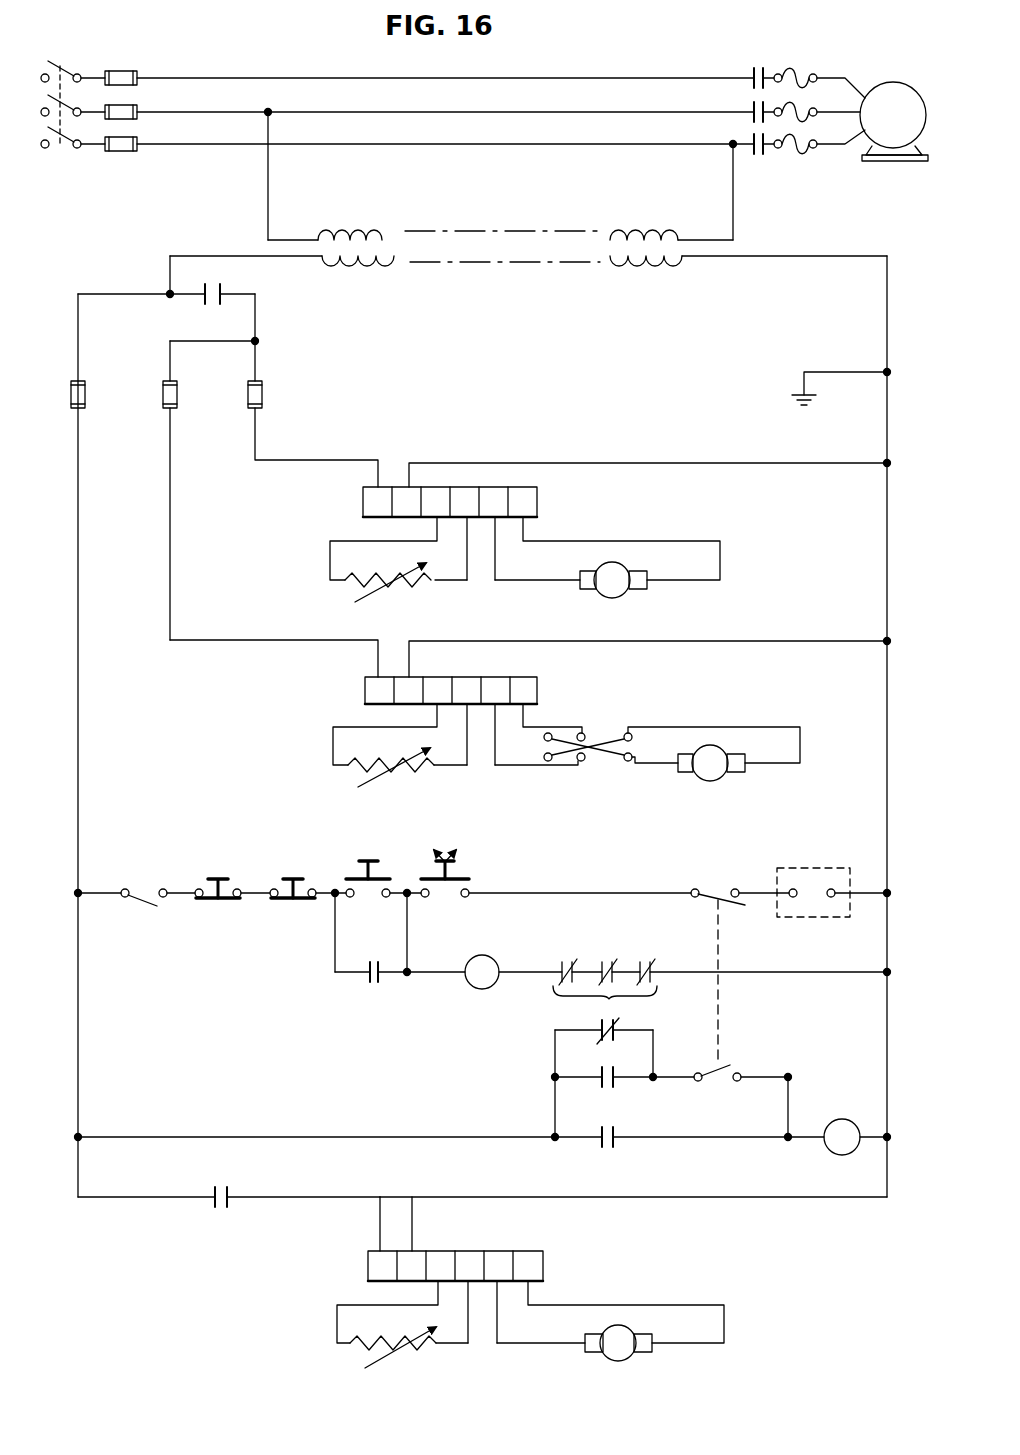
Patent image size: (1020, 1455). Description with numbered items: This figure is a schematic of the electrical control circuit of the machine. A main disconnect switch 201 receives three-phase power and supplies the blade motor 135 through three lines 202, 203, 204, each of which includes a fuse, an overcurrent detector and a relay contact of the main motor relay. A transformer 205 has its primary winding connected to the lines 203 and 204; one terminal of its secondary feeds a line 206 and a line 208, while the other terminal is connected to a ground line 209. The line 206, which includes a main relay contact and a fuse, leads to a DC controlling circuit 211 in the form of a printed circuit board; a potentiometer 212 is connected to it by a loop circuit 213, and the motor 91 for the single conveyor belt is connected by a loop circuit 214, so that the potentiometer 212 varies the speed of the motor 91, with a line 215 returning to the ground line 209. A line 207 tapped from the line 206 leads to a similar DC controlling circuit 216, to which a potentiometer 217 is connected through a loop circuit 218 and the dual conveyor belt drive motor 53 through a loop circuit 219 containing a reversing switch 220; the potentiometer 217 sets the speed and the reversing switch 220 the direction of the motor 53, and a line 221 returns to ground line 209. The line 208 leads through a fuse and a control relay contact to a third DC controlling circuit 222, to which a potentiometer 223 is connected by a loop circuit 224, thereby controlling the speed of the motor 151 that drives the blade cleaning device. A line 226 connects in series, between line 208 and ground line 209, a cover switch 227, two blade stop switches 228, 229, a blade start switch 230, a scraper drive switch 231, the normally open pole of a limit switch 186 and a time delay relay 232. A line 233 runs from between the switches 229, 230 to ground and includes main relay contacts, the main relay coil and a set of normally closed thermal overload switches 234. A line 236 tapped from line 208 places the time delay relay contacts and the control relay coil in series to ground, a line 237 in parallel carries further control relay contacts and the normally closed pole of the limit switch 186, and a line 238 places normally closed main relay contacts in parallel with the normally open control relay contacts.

The main disconnect switch 201 is at (60, 68).
The line 202 is at (280, 77).
The line 203 is at (356, 109).
The line 204 is at (399, 141).
The transformer 205 is at (352, 226).
The line 206 is at (257, 316).
The line 207 is at (166, 348).
The line 208 is at (80, 350).
The ground line 209 is at (886, 304).
The DC controlling circuit 211 is at (363, 500).
The potentiometer 212 is at (424, 595).
The loop circuit 213 is at (330, 558).
The loop circuit 214 is at (722, 556).
The line 215 is at (620, 463).
The DC controlling circuit 216 is at (365, 689).
The potentiometer 217 is at (423, 777).
The loop circuit 218 is at (333, 743).
The loop circuit 219 is at (734, 727).
The reversing switch 220 is at (603, 734).
The line 221 is at (704, 641).
The DC controlling circuit 222 is at (368, 1261).
The potentiometer 223 is at (443, 1346).
The loop circuit 224 is at (336, 1320).
The line 226 is at (100, 890).
The cover switch 227 is at (139, 892).
The blade stop switch 228 is at (222, 905).
The blade stop switch 229 is at (297, 905).
The blade start switch 230 is at (368, 904).
The scraper drive switch 231 is at (445, 904).
The time delay relay 232 is at (838, 918).
The line 233 is at (335, 964).
The thermal overload switches 234 is at (608, 999).
The line 236 is at (204, 1140).
The line 237 is at (635, 1080).
The line 238 is at (638, 1028).
The limit switch 186 is at (710, 902).
The motor 91 is at (630, 577).
The drive motor 53 is at (723, 755).
The blade motor 135 is at (885, 82).
The motor 151 is at (626, 1334).